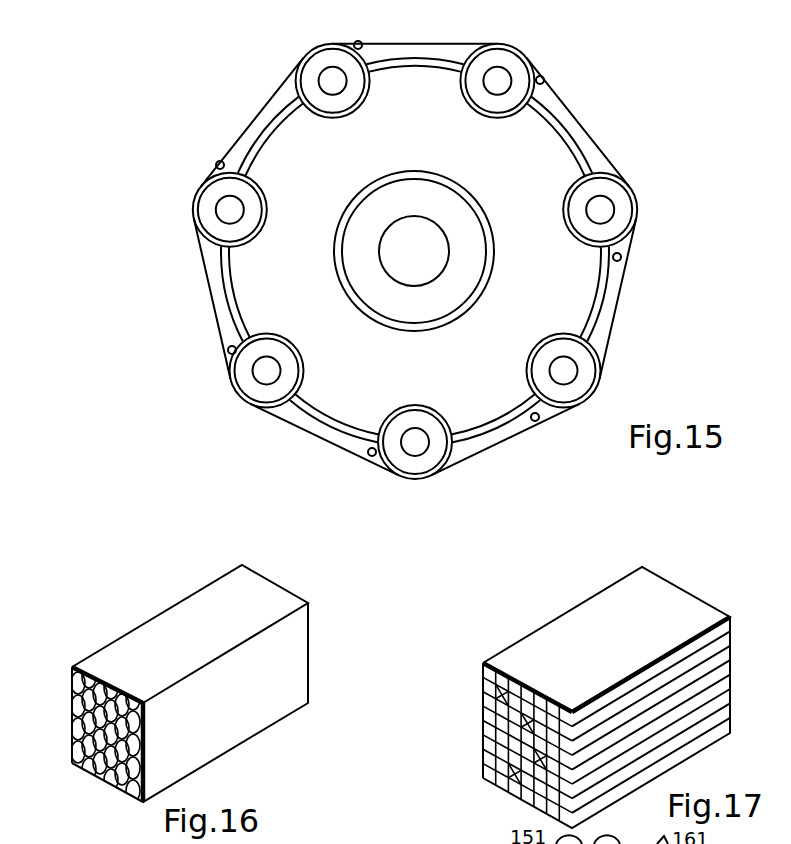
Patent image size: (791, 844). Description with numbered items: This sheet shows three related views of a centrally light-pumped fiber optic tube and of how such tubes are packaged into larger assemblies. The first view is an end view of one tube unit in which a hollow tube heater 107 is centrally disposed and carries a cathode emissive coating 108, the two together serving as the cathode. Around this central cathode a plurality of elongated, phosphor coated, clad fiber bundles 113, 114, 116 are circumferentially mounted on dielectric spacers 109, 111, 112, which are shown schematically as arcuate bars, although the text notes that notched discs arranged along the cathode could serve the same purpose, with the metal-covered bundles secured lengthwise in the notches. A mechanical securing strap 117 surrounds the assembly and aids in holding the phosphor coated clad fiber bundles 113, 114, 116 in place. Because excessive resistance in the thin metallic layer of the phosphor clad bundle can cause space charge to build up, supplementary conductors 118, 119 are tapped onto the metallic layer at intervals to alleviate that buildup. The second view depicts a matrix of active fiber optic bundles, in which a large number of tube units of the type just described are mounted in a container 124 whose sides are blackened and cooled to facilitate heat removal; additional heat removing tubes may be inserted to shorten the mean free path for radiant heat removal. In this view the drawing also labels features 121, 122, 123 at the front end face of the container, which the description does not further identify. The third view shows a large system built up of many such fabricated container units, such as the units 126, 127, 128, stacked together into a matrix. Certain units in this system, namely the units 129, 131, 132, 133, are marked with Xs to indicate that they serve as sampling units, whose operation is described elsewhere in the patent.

In FIG. 15, the hollow tube heater 107 is at (466, 215).
In FIG. 15, the cathode emissive coating 108 is at (492, 273).
In FIG. 15, the dielectric spacer 109 is at (570, 138).
In FIG. 15, the dielectric spacer 111 is at (600, 293).
In FIG. 15, the dielectric spacer 112 is at (487, 428).
In FIG. 15, the phosphor coated clad fiber bundle 113 is at (584, 384).
In FIG. 15, the phosphor coated clad fiber bundle 114 is at (627, 214).
In FIG. 15, the phosphor coated clad fiber bundle 116 is at (517, 60).
In FIG. 15, the mechanical securing strap 117 is at (260, 108).
In FIG. 15, the supplementary conductor 118 is at (361, 42).
In FIG. 15, the supplementary conductor 119 is at (544, 80).
In FIG. 16, the top edge of block 121 is at (92, 678).
In FIG. 16, the front edge of block 122 is at (78, 663).
In FIG. 16, the cellular end face 123 is at (72, 707).
In FIG. 16, the container 124 is at (290, 658).
In FIG. 17, the unit 126 is at (480, 672).
In FIG. 17, the unit 127 is at (502, 680).
In FIG. 17, the unit 128 is at (523, 683).
In FIG. 17, the sampling unit 129 is at (495, 694).
In FIG. 17, the sampling unit 131 is at (521, 724).
In FIG. 17, the sampling unit 132 is at (534, 758).
In FIG. 17, the sampling unit 133 is at (508, 776).